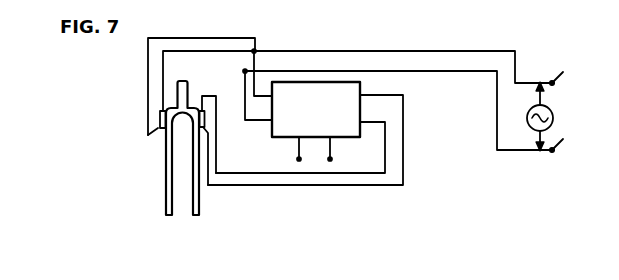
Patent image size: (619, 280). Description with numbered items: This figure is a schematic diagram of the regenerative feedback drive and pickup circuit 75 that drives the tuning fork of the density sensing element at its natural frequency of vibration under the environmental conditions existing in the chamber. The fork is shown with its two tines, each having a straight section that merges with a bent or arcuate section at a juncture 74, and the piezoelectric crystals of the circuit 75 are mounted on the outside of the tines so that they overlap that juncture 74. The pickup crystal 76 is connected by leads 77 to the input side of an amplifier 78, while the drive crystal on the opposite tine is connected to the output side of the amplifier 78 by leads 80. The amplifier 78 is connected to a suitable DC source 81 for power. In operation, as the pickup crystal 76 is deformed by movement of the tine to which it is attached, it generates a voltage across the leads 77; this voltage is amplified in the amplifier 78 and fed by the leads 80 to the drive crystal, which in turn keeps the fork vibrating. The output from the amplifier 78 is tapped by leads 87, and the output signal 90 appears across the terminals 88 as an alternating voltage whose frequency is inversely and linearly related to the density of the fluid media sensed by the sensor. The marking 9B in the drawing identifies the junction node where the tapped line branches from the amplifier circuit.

The regenerative feedback drive and pickup circuit 75 is at (480, 42).
The juncture 74 is at (160, 119).
The pickup crystal 76 is at (205, 116).
The leads 77 is at (306, 173).
The amplifier 78 is at (363, 83).
The leads 80 is at (200, 51).
The DC source 81 is at (332, 161).
The leads 87 is at (387, 70).
The terminals 88 is at (568, 105).
The output signal 90 is at (553, 112).
The junction node 9B is at (245, 71).